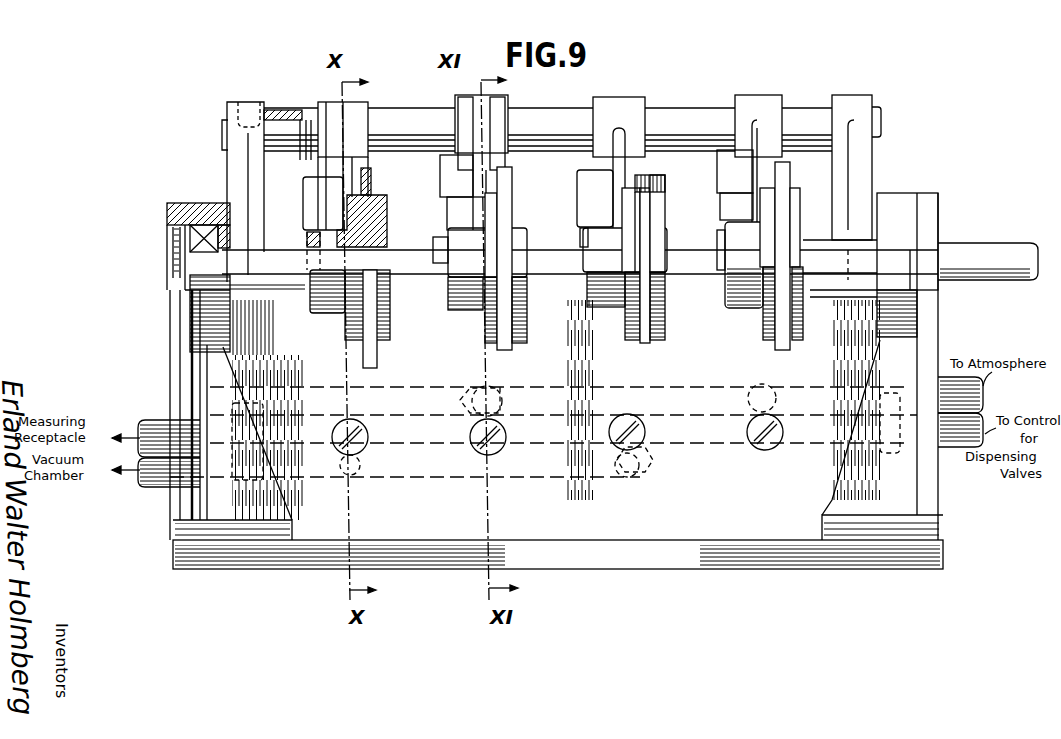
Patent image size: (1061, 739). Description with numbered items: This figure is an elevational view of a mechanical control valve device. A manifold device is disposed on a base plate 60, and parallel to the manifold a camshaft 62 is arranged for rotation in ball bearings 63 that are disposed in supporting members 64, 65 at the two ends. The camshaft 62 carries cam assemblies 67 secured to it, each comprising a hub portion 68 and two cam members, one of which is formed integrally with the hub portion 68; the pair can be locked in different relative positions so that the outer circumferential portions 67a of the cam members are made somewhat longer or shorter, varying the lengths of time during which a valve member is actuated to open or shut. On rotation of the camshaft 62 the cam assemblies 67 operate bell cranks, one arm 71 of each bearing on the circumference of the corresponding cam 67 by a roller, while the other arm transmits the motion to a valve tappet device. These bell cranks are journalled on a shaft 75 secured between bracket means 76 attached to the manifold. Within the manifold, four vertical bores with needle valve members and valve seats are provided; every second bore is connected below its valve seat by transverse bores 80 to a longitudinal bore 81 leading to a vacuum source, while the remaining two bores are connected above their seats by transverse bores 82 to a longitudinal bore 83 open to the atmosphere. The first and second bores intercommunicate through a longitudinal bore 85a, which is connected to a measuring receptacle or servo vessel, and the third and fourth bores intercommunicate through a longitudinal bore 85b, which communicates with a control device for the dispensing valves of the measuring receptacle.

The base plate 60 is at (658, 552).
The camshaft 62 is at (226, 262).
The ball bearings 63 is at (178, 228).
The supporting member 64 is at (178, 393).
The supporting member 65 is at (925, 352).
The cam assembly 67 is at (380, 210).
The outer circumferential portion 67a is at (372, 178).
The hub portion 68 is at (346, 234).
The bell crank arm 71 is at (640, 182).
The shaft 75 is at (683, 118).
The bracket means 76 is at (870, 178).
The transverse bores 80 is at (335, 473).
The longitudinal bore 81 is at (425, 478).
The transverse bores 82 is at (503, 396).
The longitudinal bore 83 is at (632, 390).
The longitudinal bore 85a is at (403, 418).
The longitudinal bore 85b is at (713, 437).